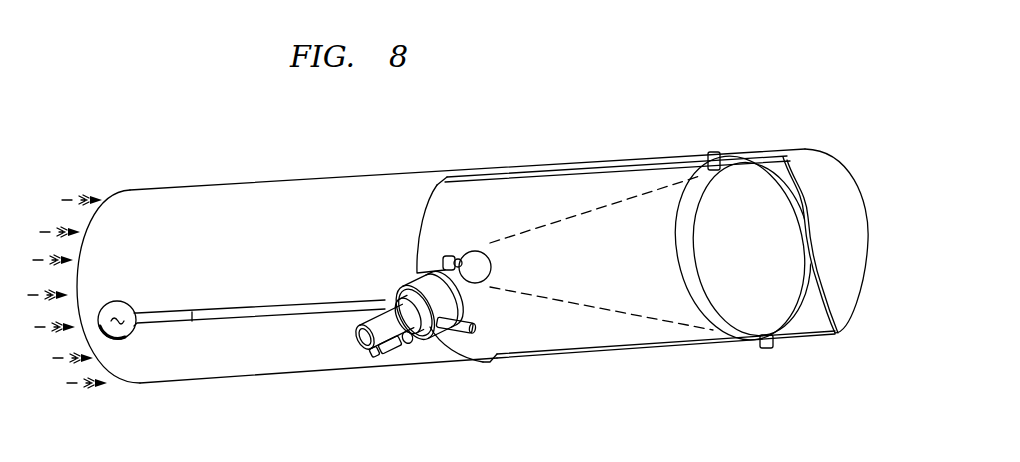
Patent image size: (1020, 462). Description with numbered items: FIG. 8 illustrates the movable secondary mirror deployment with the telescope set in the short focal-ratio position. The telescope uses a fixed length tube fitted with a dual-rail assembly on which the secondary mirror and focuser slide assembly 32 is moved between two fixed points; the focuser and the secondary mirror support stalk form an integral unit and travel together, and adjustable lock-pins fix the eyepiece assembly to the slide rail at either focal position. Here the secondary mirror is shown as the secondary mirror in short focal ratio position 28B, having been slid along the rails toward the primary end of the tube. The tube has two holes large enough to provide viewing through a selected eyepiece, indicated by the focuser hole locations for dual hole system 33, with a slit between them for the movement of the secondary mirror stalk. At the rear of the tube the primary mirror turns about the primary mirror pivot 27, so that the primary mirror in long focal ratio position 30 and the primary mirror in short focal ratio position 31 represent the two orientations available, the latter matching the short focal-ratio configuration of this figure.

The primary mirror pivot 27 is at (713, 152).
The secondary mirror in short focal ratio position 28B is at (478, 252).
The primary mirror in long focal ratio position 30 is at (677, 257).
The primary mirror in short focal ratio position 31 is at (750, 257).
The secondary mirror and focuser slide assembly 32 is at (465, 257).
The focuser hole locations for dual hole system 33 is at (115, 313).